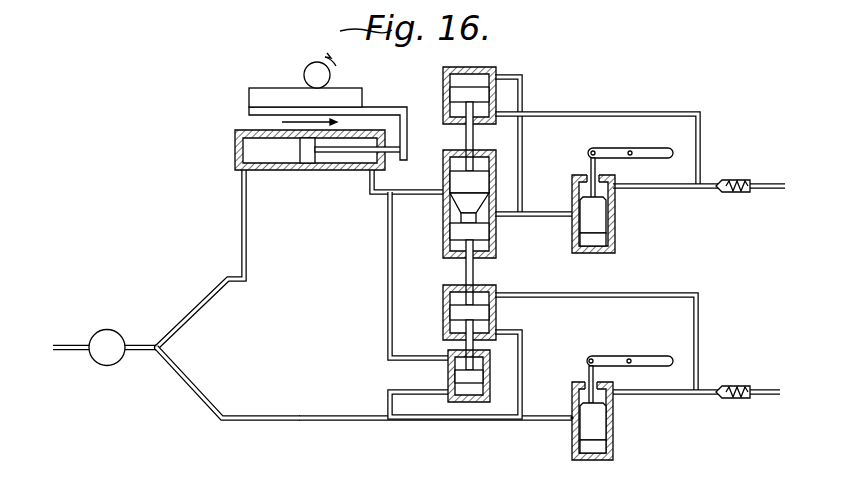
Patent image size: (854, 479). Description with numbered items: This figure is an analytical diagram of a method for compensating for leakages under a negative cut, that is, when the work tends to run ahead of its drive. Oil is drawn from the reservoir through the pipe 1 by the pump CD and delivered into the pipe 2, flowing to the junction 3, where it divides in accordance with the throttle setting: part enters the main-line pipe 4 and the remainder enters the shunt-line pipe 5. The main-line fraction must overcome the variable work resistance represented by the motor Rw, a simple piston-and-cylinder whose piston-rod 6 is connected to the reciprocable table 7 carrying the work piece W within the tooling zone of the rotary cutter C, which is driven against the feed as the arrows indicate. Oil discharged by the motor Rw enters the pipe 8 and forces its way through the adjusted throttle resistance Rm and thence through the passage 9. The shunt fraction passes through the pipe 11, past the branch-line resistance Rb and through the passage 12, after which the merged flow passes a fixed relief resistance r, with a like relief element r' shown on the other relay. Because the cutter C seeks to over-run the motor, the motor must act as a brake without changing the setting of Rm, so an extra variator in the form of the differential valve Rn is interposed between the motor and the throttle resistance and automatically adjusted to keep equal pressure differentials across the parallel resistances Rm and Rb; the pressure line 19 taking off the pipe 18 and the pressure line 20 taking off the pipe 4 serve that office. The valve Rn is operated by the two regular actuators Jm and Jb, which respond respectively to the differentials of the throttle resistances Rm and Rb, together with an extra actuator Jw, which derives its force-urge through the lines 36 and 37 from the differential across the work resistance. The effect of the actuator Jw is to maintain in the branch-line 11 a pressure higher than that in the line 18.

The pipe 1 is at (77, 346).
The pipe 2 is at (150, 346).
The junction 3 is at (161, 347).
The main-line pipe 4 is at (189, 311).
The shunt-line pipe 5 is at (192, 397).
The piston-rod 6 is at (396, 160).
The reciprocable table 7 is at (386, 111).
The pipe 8 is at (376, 196).
The passage 9 is at (571, 209).
The pipe 11 is at (353, 421).
The passage 12 is at (570, 415).
The pipe 18 is at (552, 218).
The pressure line 19 is at (522, 93).
The pressure line 20 is at (523, 358).
The line 36 is at (388, 271).
The line 37 is at (420, 392).
The work piece W is at (249, 96).
The rotary cutter C is at (320, 70).
The pump CD is at (107, 348).
The motor Rw is at (320, 172).
The differential valve Rn is at (441, 217).
The valve N is at (469, 183).
The actuator Jm is at (443, 70).
The actuator Jb is at (443, 302).
The actuator Jw is at (482, 355).
The throttle resistance Rm is at (616, 210).
The branch-line resistance Rb is at (615, 417).
The fixed resistance r is at (699, 173).
The spring valve r' is at (696, 382).